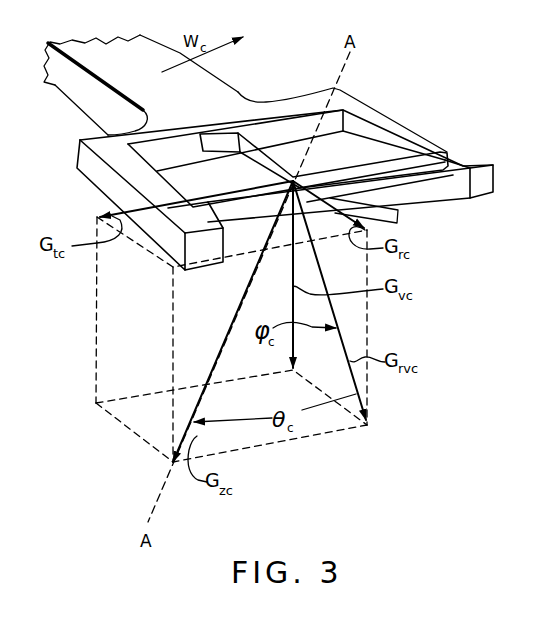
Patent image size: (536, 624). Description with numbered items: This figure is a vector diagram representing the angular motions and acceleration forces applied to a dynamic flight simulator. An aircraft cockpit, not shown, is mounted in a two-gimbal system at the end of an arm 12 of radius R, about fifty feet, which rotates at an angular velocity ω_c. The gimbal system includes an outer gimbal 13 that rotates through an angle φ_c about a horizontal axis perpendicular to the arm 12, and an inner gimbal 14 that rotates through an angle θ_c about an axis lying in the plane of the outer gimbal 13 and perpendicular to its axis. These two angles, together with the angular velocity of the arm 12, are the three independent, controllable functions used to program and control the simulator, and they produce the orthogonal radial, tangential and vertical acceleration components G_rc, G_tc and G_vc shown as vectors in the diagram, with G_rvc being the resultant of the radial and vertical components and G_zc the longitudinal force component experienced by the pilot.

The arm 12 is at (238, 92).
The outer gimbal 13 is at (442, 158).
The inner gimbal 14 is at (395, 214).